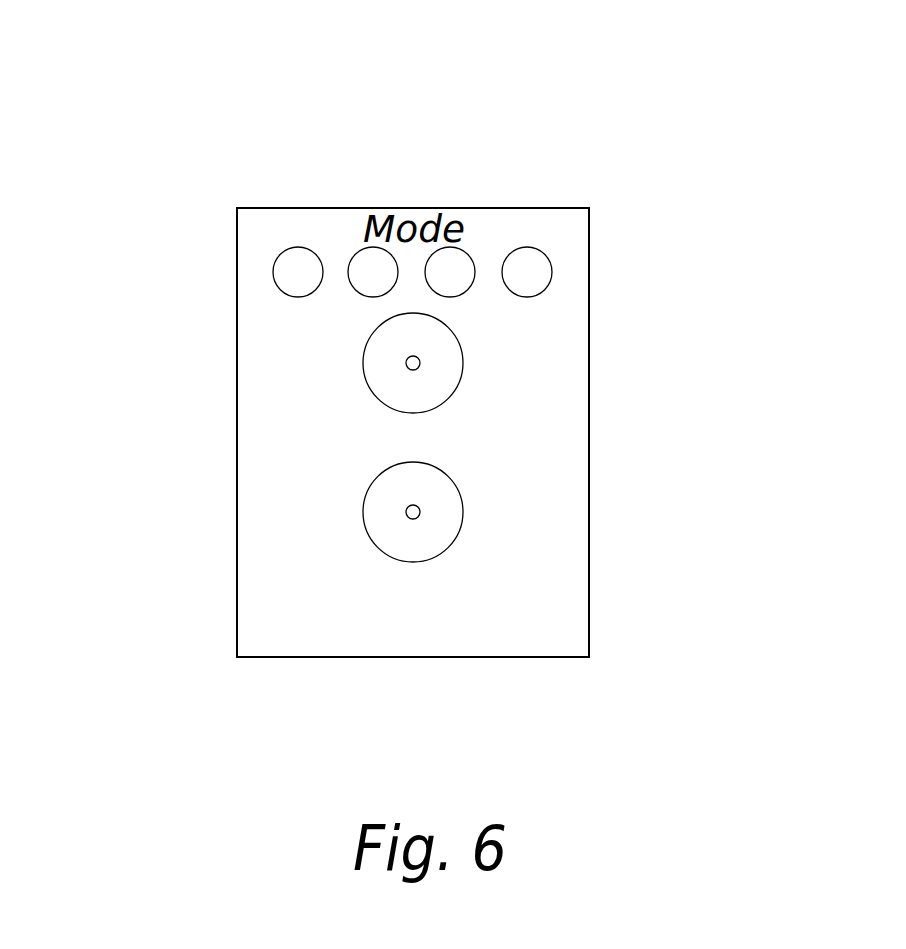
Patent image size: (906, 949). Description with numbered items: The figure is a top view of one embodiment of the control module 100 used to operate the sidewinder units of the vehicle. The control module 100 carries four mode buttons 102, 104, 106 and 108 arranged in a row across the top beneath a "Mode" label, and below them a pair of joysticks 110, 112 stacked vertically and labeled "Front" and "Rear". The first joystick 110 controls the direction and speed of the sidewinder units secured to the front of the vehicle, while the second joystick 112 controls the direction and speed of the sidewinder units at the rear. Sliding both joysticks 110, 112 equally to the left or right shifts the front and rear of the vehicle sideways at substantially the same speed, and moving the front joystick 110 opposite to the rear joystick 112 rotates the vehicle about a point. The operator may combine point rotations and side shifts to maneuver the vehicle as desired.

The control module 100 is at (347, 207).
The mode button 102 is at (273, 270).
The mode button 104 is at (398, 282).
The mode button 106 is at (474, 260).
The mode button 108 is at (553, 270).
The first joystick 110 is at (363, 363).
The second joystick 112 is at (365, 510).